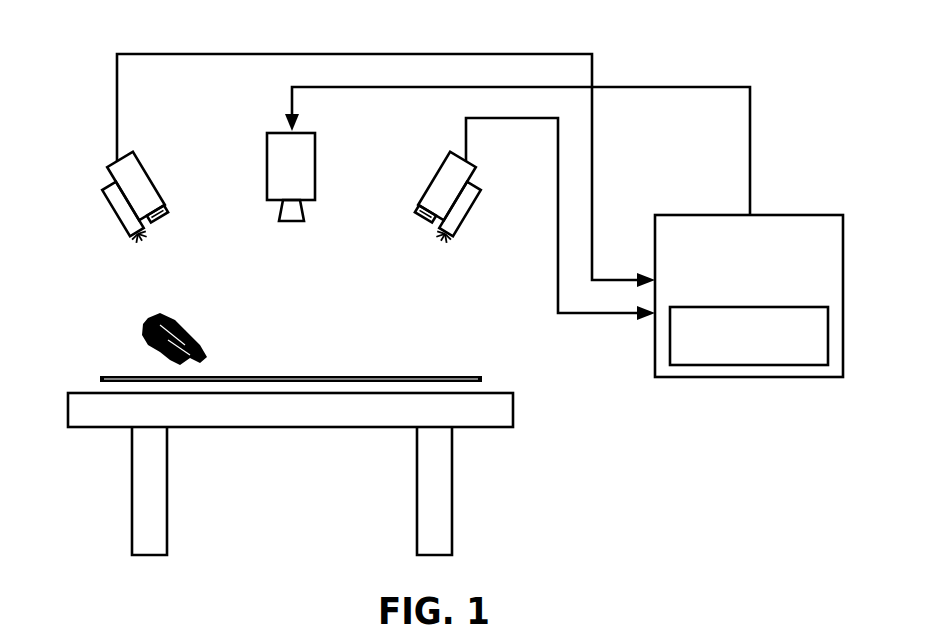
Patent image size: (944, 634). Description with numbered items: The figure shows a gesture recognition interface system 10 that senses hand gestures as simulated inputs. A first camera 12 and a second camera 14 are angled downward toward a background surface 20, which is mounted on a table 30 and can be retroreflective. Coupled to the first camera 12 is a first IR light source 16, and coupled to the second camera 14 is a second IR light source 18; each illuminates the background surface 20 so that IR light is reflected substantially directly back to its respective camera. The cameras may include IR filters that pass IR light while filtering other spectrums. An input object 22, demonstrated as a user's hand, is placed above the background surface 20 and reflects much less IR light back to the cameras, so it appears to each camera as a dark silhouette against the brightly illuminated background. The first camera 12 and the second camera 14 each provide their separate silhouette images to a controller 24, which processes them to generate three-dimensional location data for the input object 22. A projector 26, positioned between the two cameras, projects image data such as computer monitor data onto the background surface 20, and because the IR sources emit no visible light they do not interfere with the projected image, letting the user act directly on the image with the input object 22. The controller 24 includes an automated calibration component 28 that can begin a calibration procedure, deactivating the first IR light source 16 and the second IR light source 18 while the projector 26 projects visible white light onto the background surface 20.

The gesture recognition interface system 10 is at (100, 44).
The first camera 12 is at (144, 170).
The second camera 14 is at (419, 207).
The first IR light source 16 is at (113, 223).
The second IR light source 18 is at (463, 227).
The background surface 20 is at (450, 376).
The input object 22 is at (183, 323).
The controller 24 is at (797, 215).
The projector 26 is at (315, 133).
The automated calibration component 28 is at (748, 367).
The table 30 is at (513, 410).